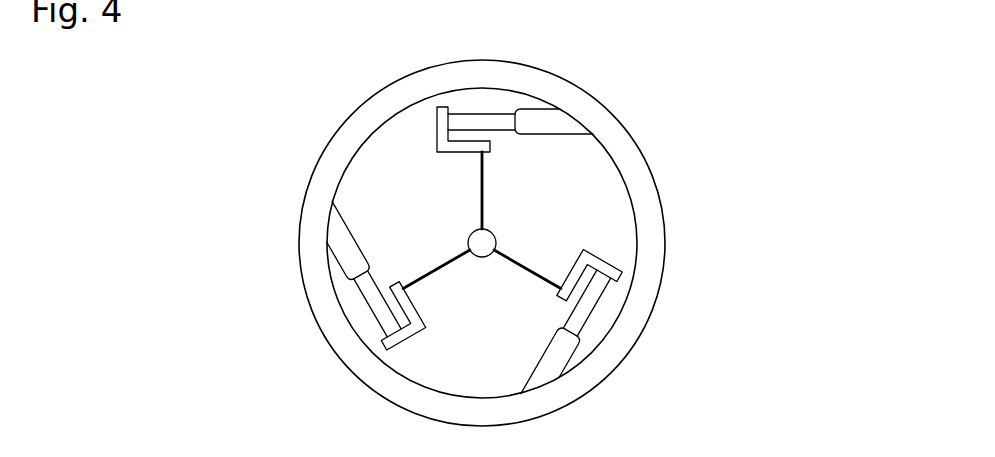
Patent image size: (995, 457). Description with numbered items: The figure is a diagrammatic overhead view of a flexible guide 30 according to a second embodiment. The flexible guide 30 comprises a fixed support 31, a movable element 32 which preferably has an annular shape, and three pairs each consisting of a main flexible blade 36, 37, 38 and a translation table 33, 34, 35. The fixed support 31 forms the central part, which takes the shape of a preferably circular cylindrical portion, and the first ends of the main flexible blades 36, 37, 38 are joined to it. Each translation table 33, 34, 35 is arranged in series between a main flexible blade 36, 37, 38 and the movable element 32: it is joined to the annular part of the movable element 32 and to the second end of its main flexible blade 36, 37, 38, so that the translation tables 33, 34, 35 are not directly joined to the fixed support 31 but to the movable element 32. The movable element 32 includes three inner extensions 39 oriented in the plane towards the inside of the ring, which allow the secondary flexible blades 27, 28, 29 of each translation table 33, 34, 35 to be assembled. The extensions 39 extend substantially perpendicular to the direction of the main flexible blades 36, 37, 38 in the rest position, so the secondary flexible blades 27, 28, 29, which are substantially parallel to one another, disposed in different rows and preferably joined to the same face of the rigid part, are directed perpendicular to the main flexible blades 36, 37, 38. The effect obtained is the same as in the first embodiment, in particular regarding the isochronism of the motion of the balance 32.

The secondary flexible blade 27 is at (384, 301).
The secondary flexible blade 28 is at (597, 297).
The secondary flexible blade 29 is at (463, 130).
The flexible guide 30 is at (250, 127).
The fixed support 31 is at (484, 241).
The movable element 32 is at (634, 140).
The translation table 33 is at (432, 96).
The translation table 34 is at (634, 263).
The translation table 35 is at (391, 360).
The main flexible blade 36 is at (483, 185).
The main flexible blade 37 is at (433, 268).
The main flexible blade 38 is at (523, 270).
The inner extension 39 is at (533, 121).